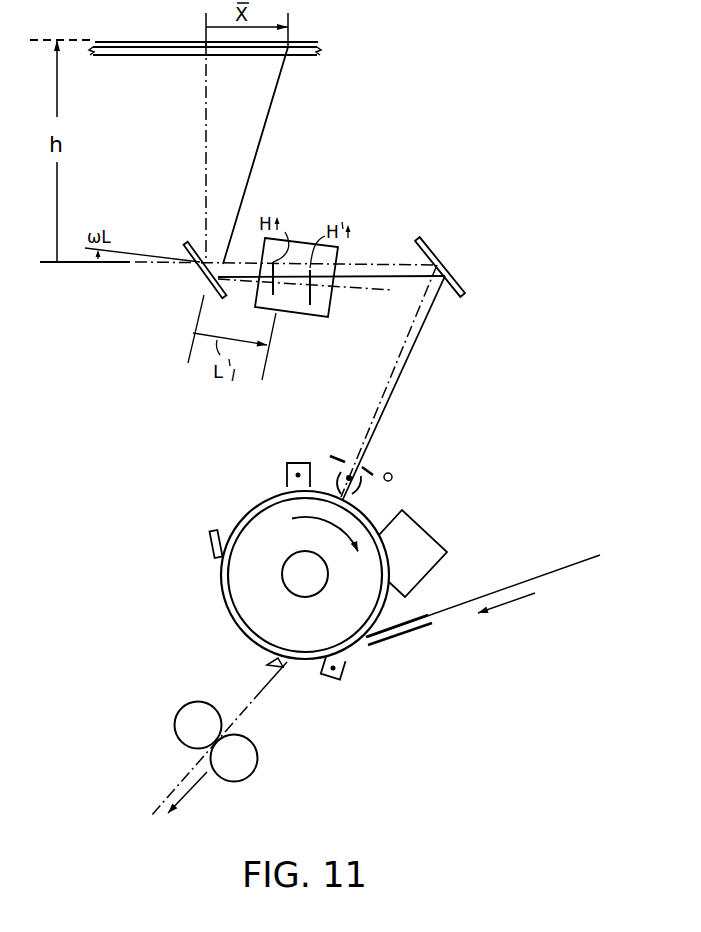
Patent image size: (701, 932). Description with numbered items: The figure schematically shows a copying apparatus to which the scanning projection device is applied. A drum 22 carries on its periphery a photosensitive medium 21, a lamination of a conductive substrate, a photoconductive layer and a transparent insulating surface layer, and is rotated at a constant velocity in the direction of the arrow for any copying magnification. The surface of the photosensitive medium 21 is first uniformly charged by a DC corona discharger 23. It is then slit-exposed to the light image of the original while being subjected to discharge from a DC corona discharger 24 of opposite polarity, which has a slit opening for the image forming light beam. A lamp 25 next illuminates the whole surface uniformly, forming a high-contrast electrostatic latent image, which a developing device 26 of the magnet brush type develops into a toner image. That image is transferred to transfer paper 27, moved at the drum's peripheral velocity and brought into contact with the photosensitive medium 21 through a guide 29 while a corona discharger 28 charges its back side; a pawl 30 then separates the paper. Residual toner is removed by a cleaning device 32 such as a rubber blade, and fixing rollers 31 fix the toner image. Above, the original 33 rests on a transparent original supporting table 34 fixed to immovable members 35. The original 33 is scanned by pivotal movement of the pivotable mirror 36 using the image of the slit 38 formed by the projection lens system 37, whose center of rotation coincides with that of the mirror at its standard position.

The photosensitive medium 21 is at (222, 594).
The drum 22 is at (250, 612).
The DC corona discharger 23 is at (287, 466).
The DC corona discharger 24 is at (335, 474).
The lamp 25 is at (393, 477).
The developing device 26 is at (445, 548).
The transfer paper 27 is at (560, 572).
The corona discharger 28 is at (333, 684).
The guide 29 is at (410, 637).
The pawl 30 is at (266, 666).
The fixing rollers 31 is at (190, 703).
The cleaning device 32 is at (209, 532).
The original 33 is at (305, 42).
The original supporting table 34 is at (300, 56).
The immovable members 35 is at (320, 51).
The pivotable mirror 36 is at (216, 300).
The projection lens system 37 is at (308, 316).
The slit 38 is at (367, 468).